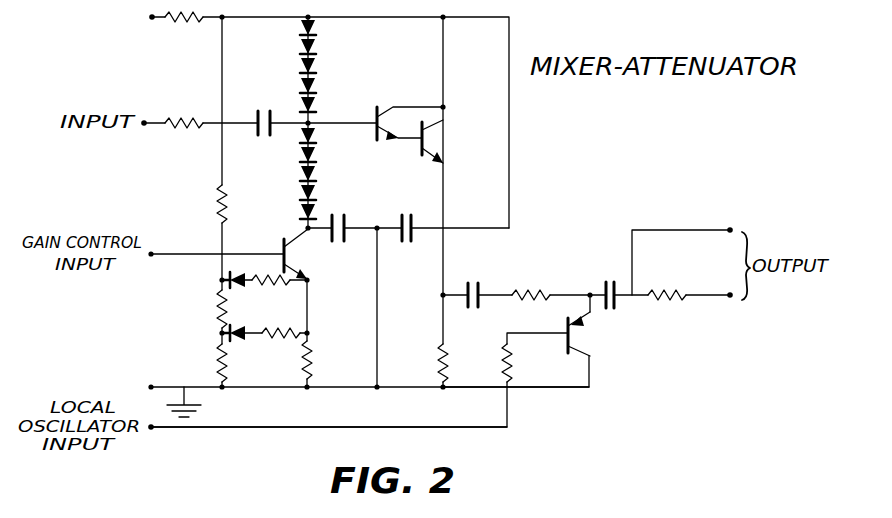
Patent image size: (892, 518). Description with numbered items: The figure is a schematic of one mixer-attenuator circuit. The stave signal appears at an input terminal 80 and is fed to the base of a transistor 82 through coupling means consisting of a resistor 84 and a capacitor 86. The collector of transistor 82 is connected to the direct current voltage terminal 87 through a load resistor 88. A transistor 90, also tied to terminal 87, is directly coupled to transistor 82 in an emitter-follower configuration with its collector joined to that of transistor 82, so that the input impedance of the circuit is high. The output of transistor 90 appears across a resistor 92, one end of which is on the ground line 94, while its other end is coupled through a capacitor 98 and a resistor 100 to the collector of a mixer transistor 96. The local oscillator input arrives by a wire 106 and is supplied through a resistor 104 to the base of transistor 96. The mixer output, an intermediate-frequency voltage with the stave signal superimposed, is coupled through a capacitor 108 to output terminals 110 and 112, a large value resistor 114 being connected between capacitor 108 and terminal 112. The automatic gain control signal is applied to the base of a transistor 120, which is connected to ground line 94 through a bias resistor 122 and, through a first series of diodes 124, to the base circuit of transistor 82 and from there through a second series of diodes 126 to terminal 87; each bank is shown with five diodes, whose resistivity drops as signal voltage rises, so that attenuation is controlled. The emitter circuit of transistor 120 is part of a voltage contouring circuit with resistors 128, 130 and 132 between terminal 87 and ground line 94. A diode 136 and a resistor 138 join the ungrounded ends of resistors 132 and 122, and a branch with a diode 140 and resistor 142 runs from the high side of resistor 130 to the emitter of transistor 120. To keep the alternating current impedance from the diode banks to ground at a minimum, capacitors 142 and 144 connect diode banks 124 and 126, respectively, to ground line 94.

The input terminal 80 is at (144, 121).
The transistor 82 is at (380, 108).
The resistor 84 is at (183, 128).
The capacitor 86 is at (260, 137).
The direct current voltage terminal 87 is at (154, 19).
The load resistor 88 is at (176, 22).
The transistor 90 is at (436, 132).
The resistor 92 is at (446, 356).
The ground line 94 is at (541, 389).
The mixer transistor 96 is at (588, 332).
The capacitor 98 is at (480, 306).
The resistor 100 is at (530, 292).
The resistor 104 is at (510, 358).
The wire 106 is at (394, 422).
The capacitor 108 is at (616, 306).
The output terminal 110 is at (731, 228).
The output terminal 112 is at (732, 298).
The large value resistor 114 is at (670, 300).
The transistor 120 is at (300, 248).
The bias resistor 122 is at (309, 360).
The first series of diodes 124 is at (324, 130).
The second series of diodes 126 is at (324, 25).
The resistor 128 is at (224, 195).
The resistor 130 is at (219, 306).
The resistor 132 is at (219, 361).
The diode 136 is at (233, 342).
The resistor 138 is at (286, 339).
The diode 140 is at (236, 289).
The resistor / capacitor 142 is at (346, 221).
The capacitor 144 is at (404, 243).